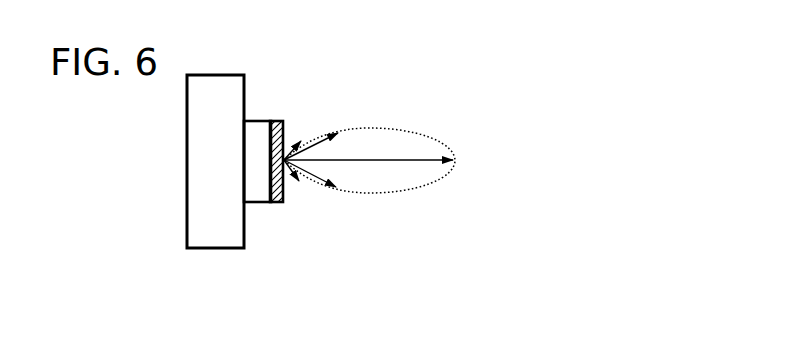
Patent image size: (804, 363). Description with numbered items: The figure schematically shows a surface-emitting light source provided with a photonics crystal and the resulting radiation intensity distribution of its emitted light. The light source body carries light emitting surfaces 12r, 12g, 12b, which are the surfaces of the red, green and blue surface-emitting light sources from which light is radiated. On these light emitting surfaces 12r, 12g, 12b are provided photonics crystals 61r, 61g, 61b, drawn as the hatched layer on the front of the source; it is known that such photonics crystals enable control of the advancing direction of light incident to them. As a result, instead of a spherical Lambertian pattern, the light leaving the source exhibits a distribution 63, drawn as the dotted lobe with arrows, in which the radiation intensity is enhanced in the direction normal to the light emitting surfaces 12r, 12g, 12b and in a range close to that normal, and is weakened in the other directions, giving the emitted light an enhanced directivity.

The light emitting surface 12r is at (328, 105).
The light emitting surface 12g is at (328, 105).
The light emitting surface 12b is at (257, 120).
The photonics crystal 61r is at (357, 213).
The photonics crystal 61g is at (357, 213).
The photonics crystal 61b is at (278, 203).
The distribution 63 is at (443, 140).